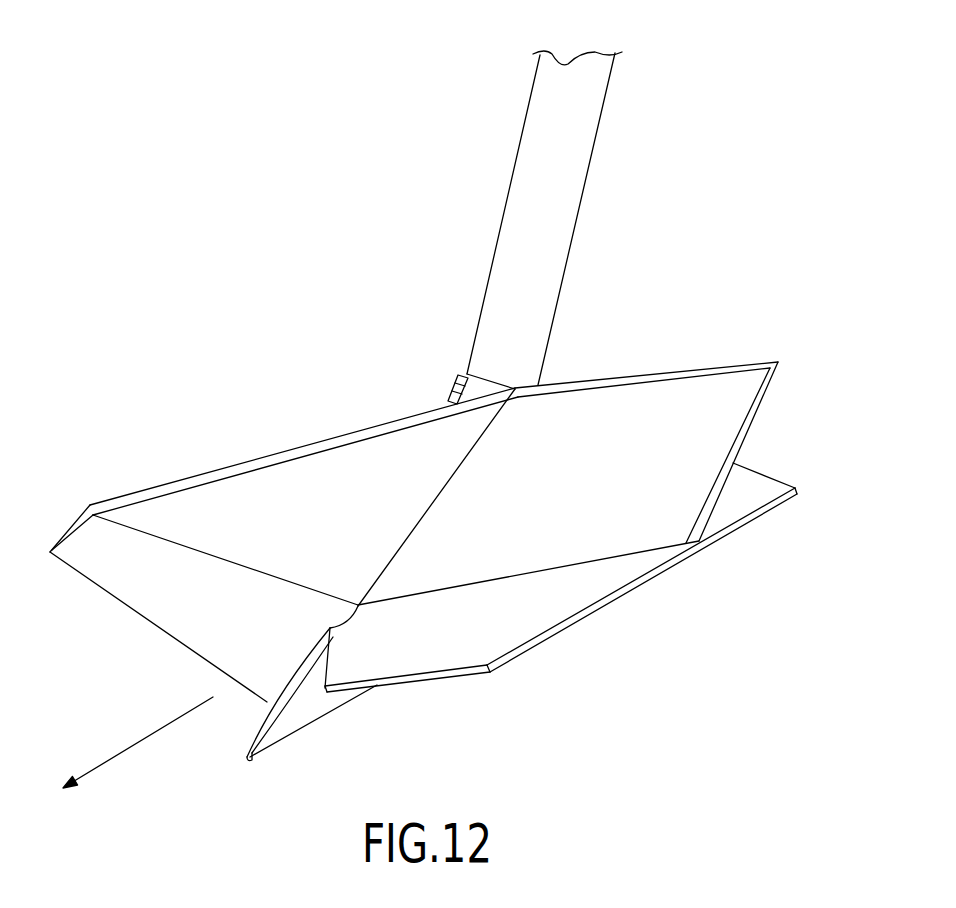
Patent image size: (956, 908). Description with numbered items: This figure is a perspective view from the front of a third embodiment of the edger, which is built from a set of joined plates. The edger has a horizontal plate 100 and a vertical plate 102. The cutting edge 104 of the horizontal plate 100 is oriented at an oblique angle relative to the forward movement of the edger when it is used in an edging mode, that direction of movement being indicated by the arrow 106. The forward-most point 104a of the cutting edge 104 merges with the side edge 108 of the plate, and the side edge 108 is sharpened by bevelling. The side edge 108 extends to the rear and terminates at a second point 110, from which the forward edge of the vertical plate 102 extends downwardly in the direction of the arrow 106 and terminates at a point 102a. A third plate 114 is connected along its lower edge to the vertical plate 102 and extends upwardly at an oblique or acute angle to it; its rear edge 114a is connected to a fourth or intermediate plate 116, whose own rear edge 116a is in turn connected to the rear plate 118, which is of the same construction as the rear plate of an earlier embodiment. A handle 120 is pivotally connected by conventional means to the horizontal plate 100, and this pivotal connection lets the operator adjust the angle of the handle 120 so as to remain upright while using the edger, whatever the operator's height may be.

The horizontal plate 100 is at (540, 613).
The vertical plate 102 is at (295, 713).
The point 102a is at (247, 760).
The cutting edge 104 is at (440, 679).
The forward-most point 104a is at (325, 693).
The arrow 106 is at (125, 750).
The side edge 108 is at (313, 668).
The second point 110 is at (352, 614).
The third plate 114 is at (138, 597).
The rear edge 114a is at (247, 567).
The intermediate plate 116 is at (408, 475).
The rear edge 116a is at (453, 480).
The rear plate 118 is at (609, 395).
The handle 120 is at (567, 262).